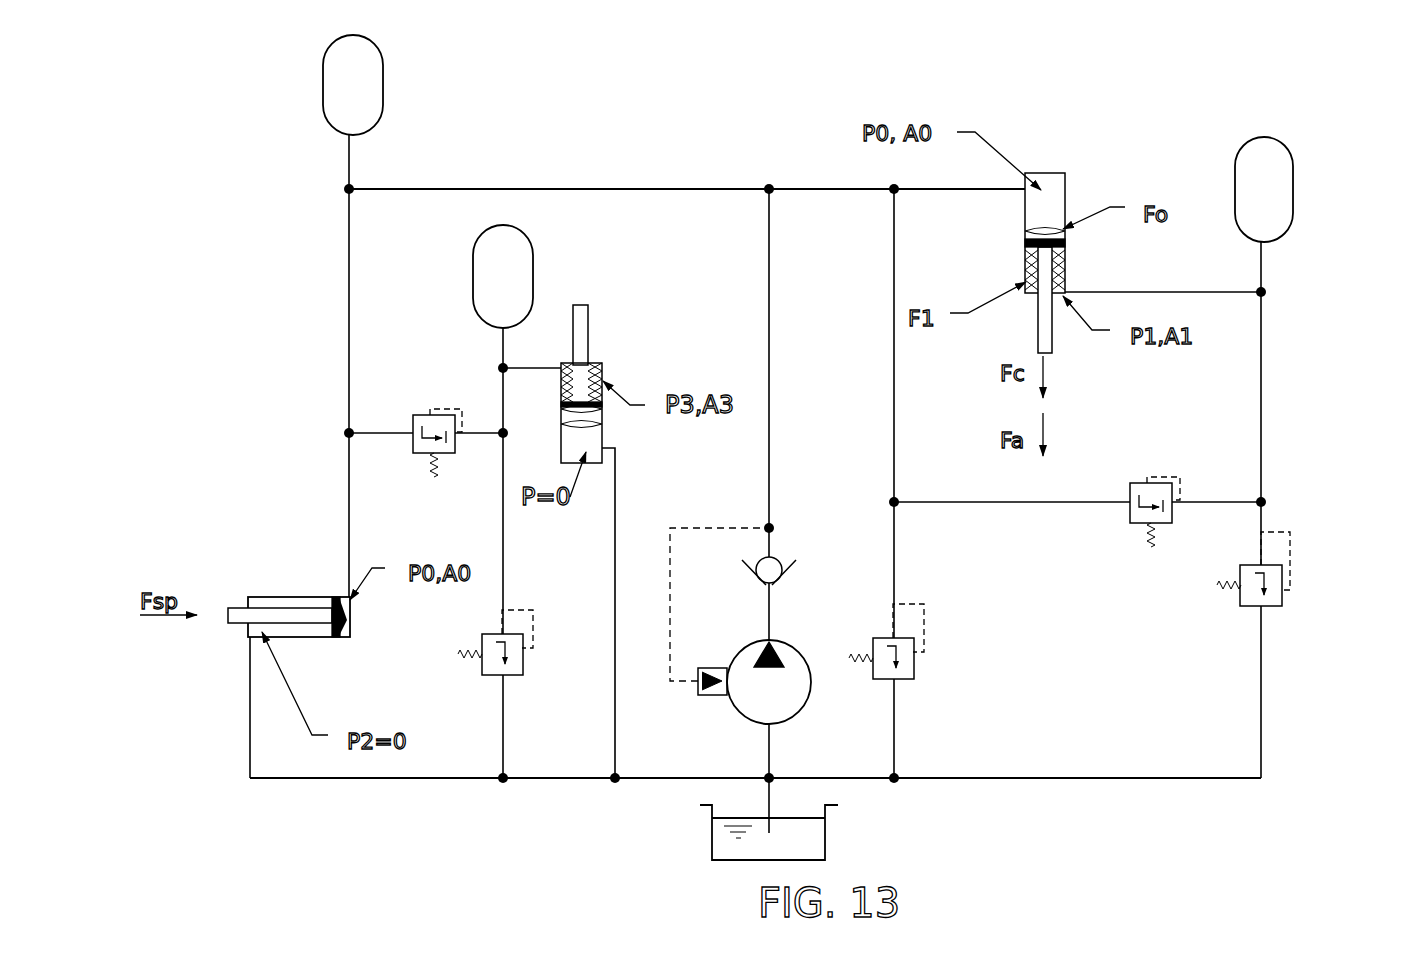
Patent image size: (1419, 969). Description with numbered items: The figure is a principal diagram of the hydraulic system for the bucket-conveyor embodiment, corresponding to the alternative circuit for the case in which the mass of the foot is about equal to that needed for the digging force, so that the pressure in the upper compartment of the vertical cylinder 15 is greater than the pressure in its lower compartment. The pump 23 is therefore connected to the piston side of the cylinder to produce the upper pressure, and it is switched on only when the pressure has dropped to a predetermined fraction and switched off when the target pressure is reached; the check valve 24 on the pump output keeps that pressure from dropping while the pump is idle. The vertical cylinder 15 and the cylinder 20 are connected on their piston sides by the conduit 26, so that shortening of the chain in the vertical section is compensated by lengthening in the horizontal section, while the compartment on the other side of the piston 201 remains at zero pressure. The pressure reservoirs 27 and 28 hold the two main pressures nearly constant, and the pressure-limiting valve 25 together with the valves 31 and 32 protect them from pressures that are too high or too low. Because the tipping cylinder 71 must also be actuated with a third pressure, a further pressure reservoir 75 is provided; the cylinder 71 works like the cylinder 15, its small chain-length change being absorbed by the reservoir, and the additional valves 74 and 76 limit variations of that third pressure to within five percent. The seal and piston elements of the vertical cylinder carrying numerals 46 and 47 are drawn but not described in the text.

The vertical cylinder 15 is at (1032, 230).
The cylinder 20 is at (332, 627).
The pump 23 is at (724, 645).
The check valve 24 is at (779, 562).
The pressure-limiting valve 25 is at (923, 656).
The conduit 26 is at (687, 162).
The pressure reservoir 27 is at (1327, 175).
The pressure reservoir 28 is at (428, 85).
The valve 31 is at (1153, 500).
The valve 32 is at (1293, 582).
The piston 46 is at (985, 227).
The seal 47 is at (985, 265).
The tipping cylinder 71 is at (627, 377).
The valve 74 is at (435, 428).
The pressure reservoir 75 is at (550, 269).
The valve 76 is at (523, 659).
The piston 201 is at (399, 662).